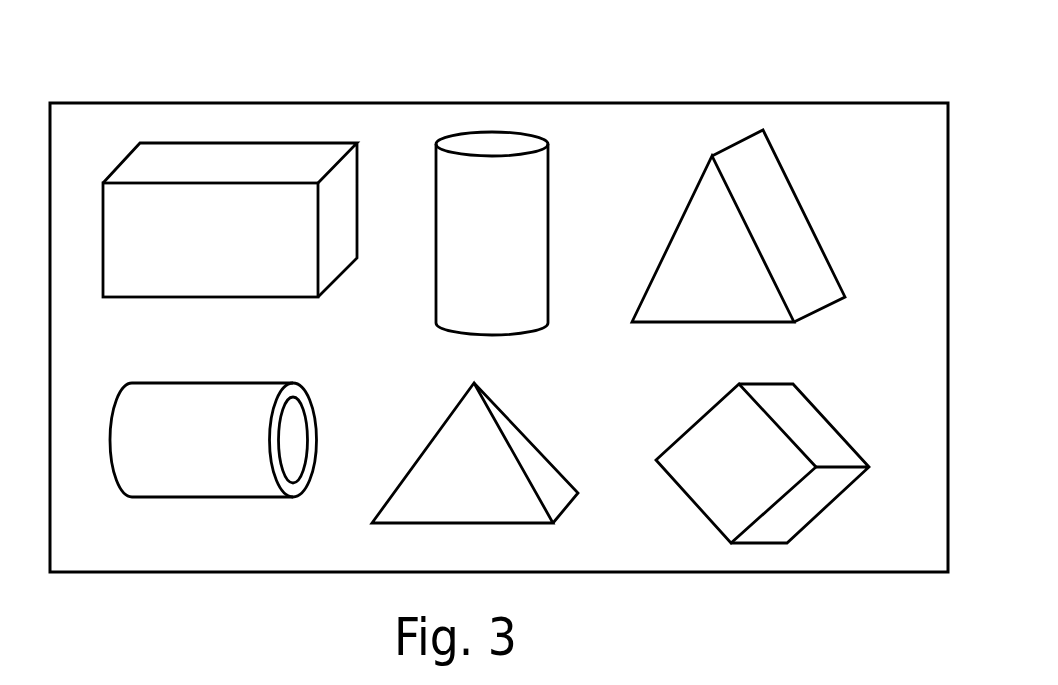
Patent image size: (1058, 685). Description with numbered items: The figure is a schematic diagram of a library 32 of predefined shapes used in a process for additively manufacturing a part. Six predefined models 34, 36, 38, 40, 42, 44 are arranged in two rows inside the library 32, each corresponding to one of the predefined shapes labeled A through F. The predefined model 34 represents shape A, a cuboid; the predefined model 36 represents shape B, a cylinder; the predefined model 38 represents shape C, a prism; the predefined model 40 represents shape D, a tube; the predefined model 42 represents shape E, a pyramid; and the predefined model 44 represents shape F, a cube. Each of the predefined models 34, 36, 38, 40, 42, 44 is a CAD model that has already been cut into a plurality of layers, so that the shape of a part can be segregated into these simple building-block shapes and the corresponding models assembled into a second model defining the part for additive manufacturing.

The library of predefined shapes 32 is at (835, 157).
The predefined model 34 is at (231, 283).
The predefined model 36 is at (501, 320).
The predefined model 38 is at (733, 302).
The predefined model 40 is at (223, 478).
The predefined model 42 is at (485, 500).
The predefined model 44 is at (823, 487).